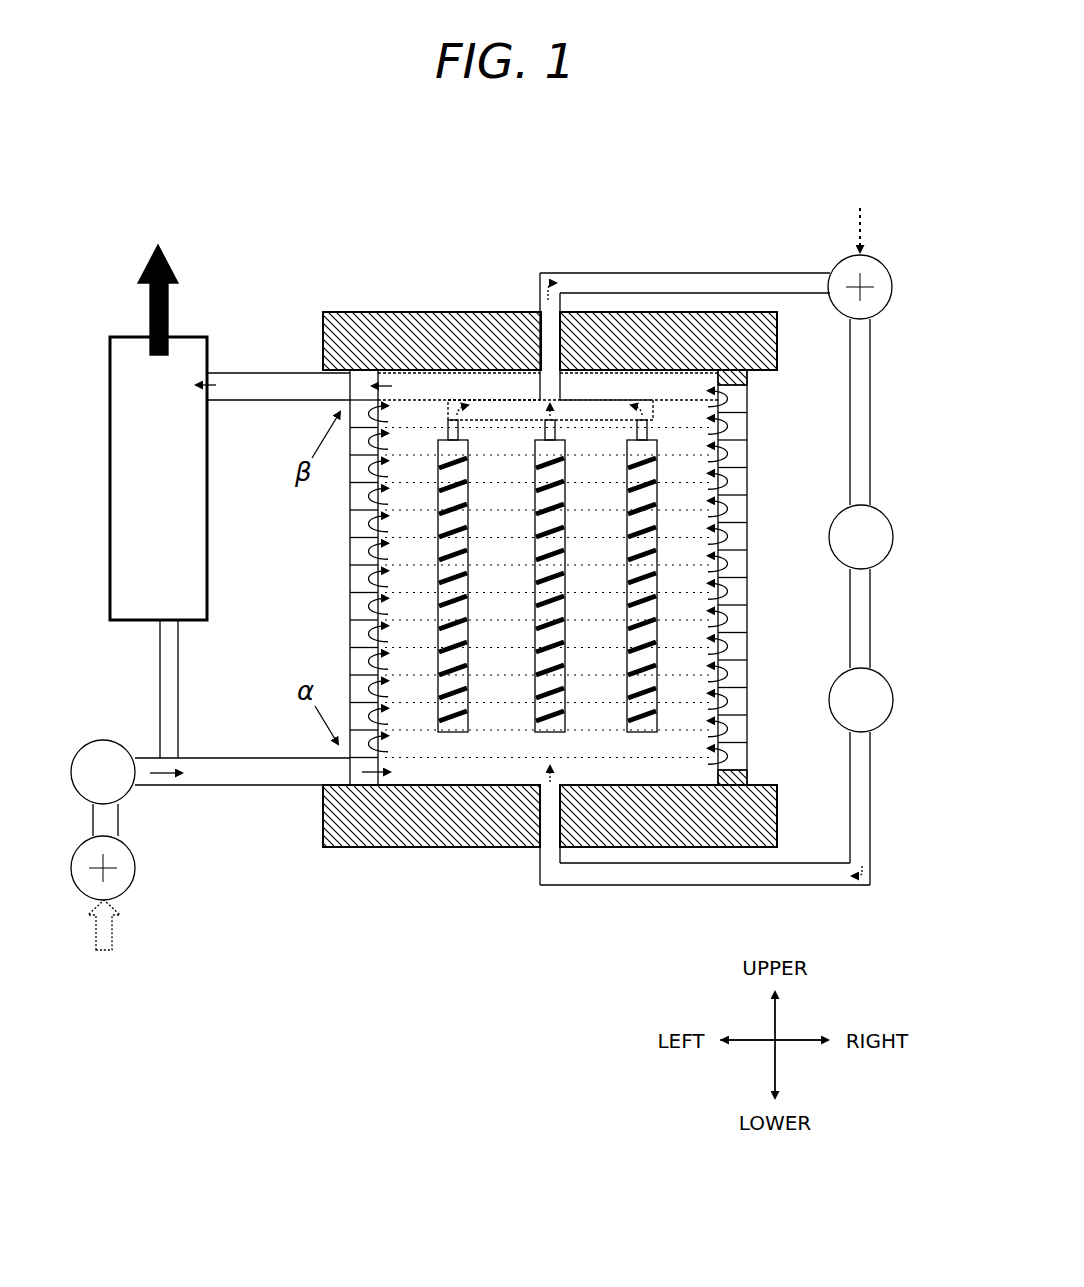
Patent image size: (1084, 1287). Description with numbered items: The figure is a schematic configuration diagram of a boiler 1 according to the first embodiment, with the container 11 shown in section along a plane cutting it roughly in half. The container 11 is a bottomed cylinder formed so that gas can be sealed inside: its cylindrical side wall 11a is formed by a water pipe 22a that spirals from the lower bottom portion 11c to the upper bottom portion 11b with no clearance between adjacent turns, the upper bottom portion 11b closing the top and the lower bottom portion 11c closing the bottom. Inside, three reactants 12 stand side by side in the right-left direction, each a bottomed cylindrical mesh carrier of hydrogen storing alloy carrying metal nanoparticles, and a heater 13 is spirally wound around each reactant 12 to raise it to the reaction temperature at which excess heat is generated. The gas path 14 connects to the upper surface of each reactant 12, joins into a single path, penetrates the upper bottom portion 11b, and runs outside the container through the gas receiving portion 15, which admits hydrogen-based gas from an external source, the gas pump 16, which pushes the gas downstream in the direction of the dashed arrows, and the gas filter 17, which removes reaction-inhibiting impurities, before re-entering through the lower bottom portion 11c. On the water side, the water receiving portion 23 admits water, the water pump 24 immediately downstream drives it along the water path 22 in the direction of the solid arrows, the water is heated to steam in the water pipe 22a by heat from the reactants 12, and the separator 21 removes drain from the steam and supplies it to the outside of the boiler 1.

The boiler 1 is at (895, 113).
The container 11 is at (504, 296).
The side wall 11a is at (350, 578).
The upper bottom portion 11b is at (430, 308).
The lower bottom portion 11c is at (350, 848).
The reactant 12 is at (447, 735).
The heater 13 is at (459, 738).
The gas path 14 is at (645, 273).
The gas receiving portion 15 is at (831, 313).
The gas pump 16 is at (875, 510).
The gas filter 17 is at (885, 682).
The separator 21 is at (192, 337).
The water path 22 is at (222, 402).
The water pipe 22a is at (622, 768).
The water receiving portion 23 is at (135, 882).
The water pump 24 is at (112, 742).